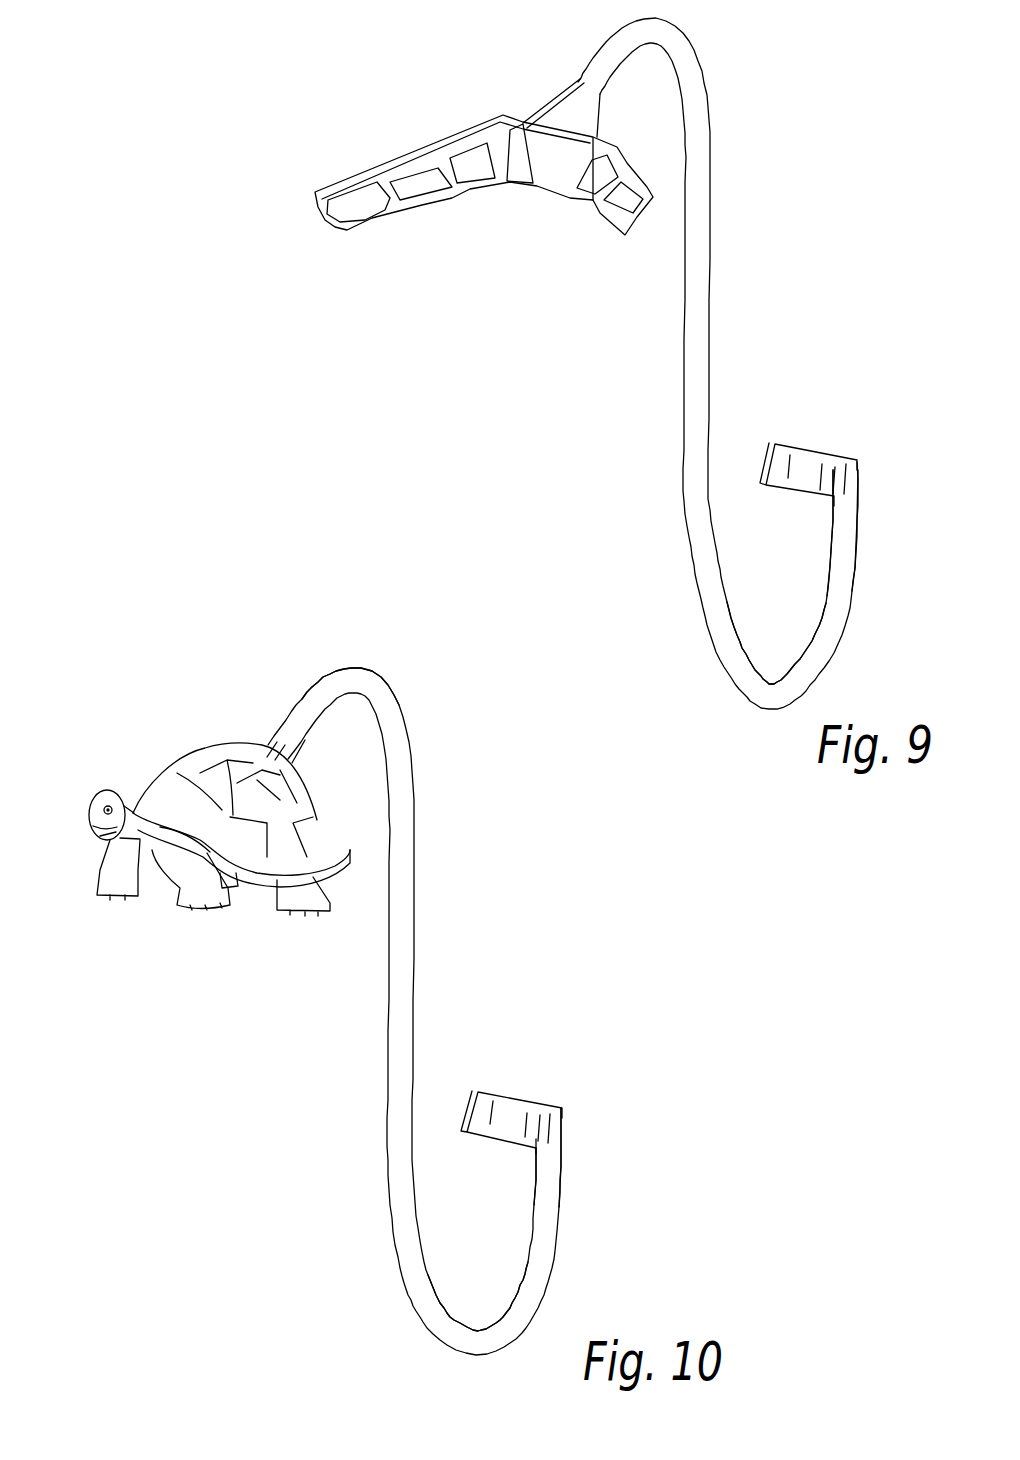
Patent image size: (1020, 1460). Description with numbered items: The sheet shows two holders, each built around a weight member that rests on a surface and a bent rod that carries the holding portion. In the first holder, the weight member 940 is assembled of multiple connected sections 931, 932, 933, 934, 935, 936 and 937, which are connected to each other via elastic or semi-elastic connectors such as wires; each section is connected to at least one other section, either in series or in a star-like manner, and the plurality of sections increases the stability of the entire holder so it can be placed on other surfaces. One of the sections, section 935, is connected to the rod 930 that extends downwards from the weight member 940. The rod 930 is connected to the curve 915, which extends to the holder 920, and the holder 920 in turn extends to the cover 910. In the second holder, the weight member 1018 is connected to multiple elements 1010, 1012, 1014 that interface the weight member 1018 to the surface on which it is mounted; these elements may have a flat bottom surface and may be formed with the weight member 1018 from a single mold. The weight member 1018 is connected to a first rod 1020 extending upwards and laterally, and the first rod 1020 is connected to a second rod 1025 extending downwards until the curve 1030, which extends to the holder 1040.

In FIG. 9, the cover 910 is at (816, 447).
In FIG. 9, the curve 915 is at (745, 702).
In FIG. 9, the holder 920 is at (826, 606).
In FIG. 9, the rod 930 is at (712, 307).
In FIG. 9, the section 931 is at (372, 220).
In FIG. 9, the section 932 is at (432, 199).
In FIG. 9, the section 933 is at (477, 183).
In FIG. 9, the section 934 is at (517, 184).
In FIG. 9, the section 935 is at (560, 97).
In FIG. 9, the section 936 is at (590, 203).
In FIG. 9, the section 937 is at (628, 235).
In FIG. 9, the weight member 940 is at (493, 191).
In FIG. 10, the element 1010 is at (202, 910).
In FIG. 10, the element 1012 is at (303, 913).
In FIG. 10, the element 1014 is at (113, 897).
In FIG. 10, the weight member 1018 is at (324, 832).
In FIG. 10, the first rod 1020 is at (310, 688).
In FIG. 10, the second rod 1025 is at (415, 806).
In FIG. 10, the curve 1030 is at (447, 1354).
In FIG. 10, the holder 1040 is at (532, 1236).